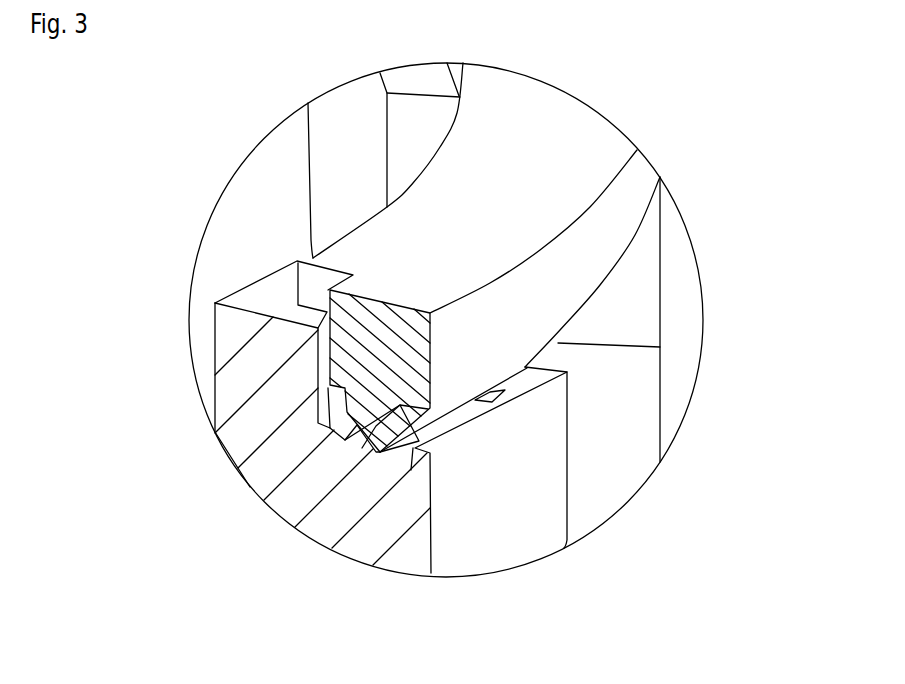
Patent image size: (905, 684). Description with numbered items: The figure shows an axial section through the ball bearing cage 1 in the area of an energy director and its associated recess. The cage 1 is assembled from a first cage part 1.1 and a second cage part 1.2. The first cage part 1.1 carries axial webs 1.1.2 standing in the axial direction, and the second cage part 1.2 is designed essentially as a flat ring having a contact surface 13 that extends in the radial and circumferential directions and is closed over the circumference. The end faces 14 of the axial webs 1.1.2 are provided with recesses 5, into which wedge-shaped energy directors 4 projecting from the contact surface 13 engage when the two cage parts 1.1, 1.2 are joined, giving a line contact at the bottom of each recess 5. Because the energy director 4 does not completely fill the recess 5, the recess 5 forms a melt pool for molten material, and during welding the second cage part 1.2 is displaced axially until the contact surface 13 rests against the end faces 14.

The cage 1 is at (815, 127).
The first cage part 1.1 is at (362, 556).
The axial webs 1.1.2 is at (518, 513).
The second cage part 1.2 is at (560, 130).
The energy director 4 is at (347, 408).
The recess 5 is at (328, 432).
The contact surface 13 is at (515, 410).
The end faces 14 is at (525, 387).